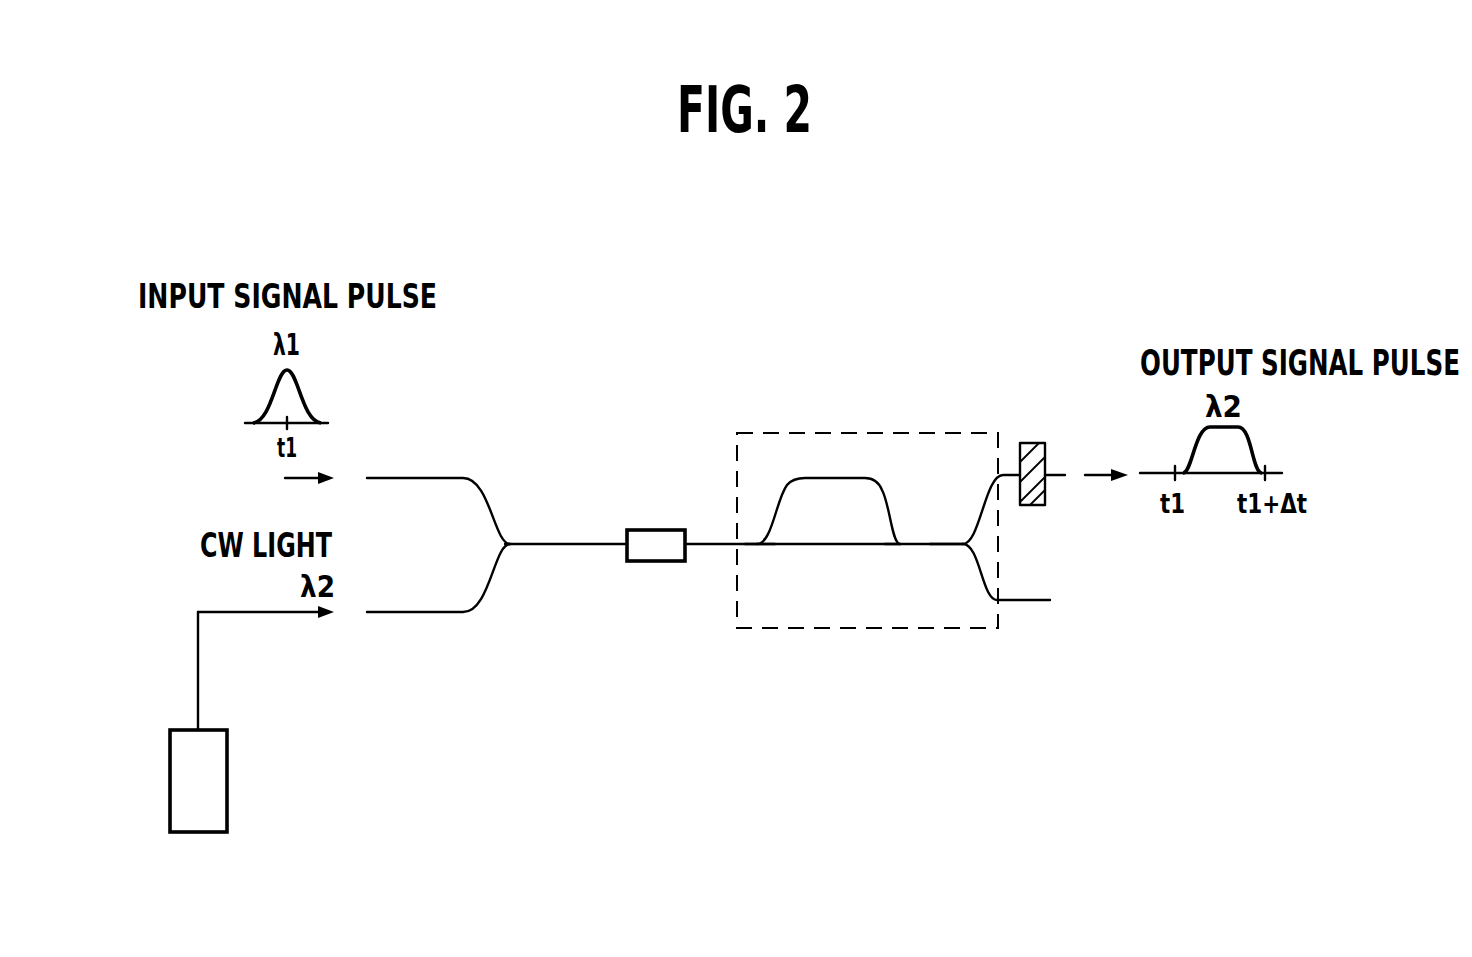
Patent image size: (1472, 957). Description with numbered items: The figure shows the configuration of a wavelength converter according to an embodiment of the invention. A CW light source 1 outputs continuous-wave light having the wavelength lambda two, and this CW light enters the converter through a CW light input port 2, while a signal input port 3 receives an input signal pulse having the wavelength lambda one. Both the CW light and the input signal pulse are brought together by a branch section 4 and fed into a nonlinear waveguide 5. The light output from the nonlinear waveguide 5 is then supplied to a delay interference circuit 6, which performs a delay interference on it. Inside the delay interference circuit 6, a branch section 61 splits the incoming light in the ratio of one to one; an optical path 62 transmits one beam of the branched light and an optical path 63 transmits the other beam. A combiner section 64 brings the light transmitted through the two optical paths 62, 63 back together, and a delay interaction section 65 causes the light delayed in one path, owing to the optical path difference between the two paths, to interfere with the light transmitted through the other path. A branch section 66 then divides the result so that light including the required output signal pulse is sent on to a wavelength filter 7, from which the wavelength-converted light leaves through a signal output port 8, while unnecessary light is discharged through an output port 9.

The CW light source 1 is at (227, 797).
The CW light input port 2 is at (367, 605).
The signal input port 3 is at (368, 472).
The branch section 4 is at (512, 553).
The nonlinear waveguide 5 is at (657, 530).
The delay interference circuit 6 is at (803, 432).
The branch section 61 is at (753, 560).
The optical path 62 is at (837, 547).
The optical path 63 is at (847, 478).
The combiner section 64 is at (902, 560).
The delay interaction section 65 is at (938, 543).
The branch section 66 is at (959, 522).
The wavelength filter 7 is at (1032, 443).
The signal output port 8 is at (1065, 470).
The output port 9 is at (1045, 605).